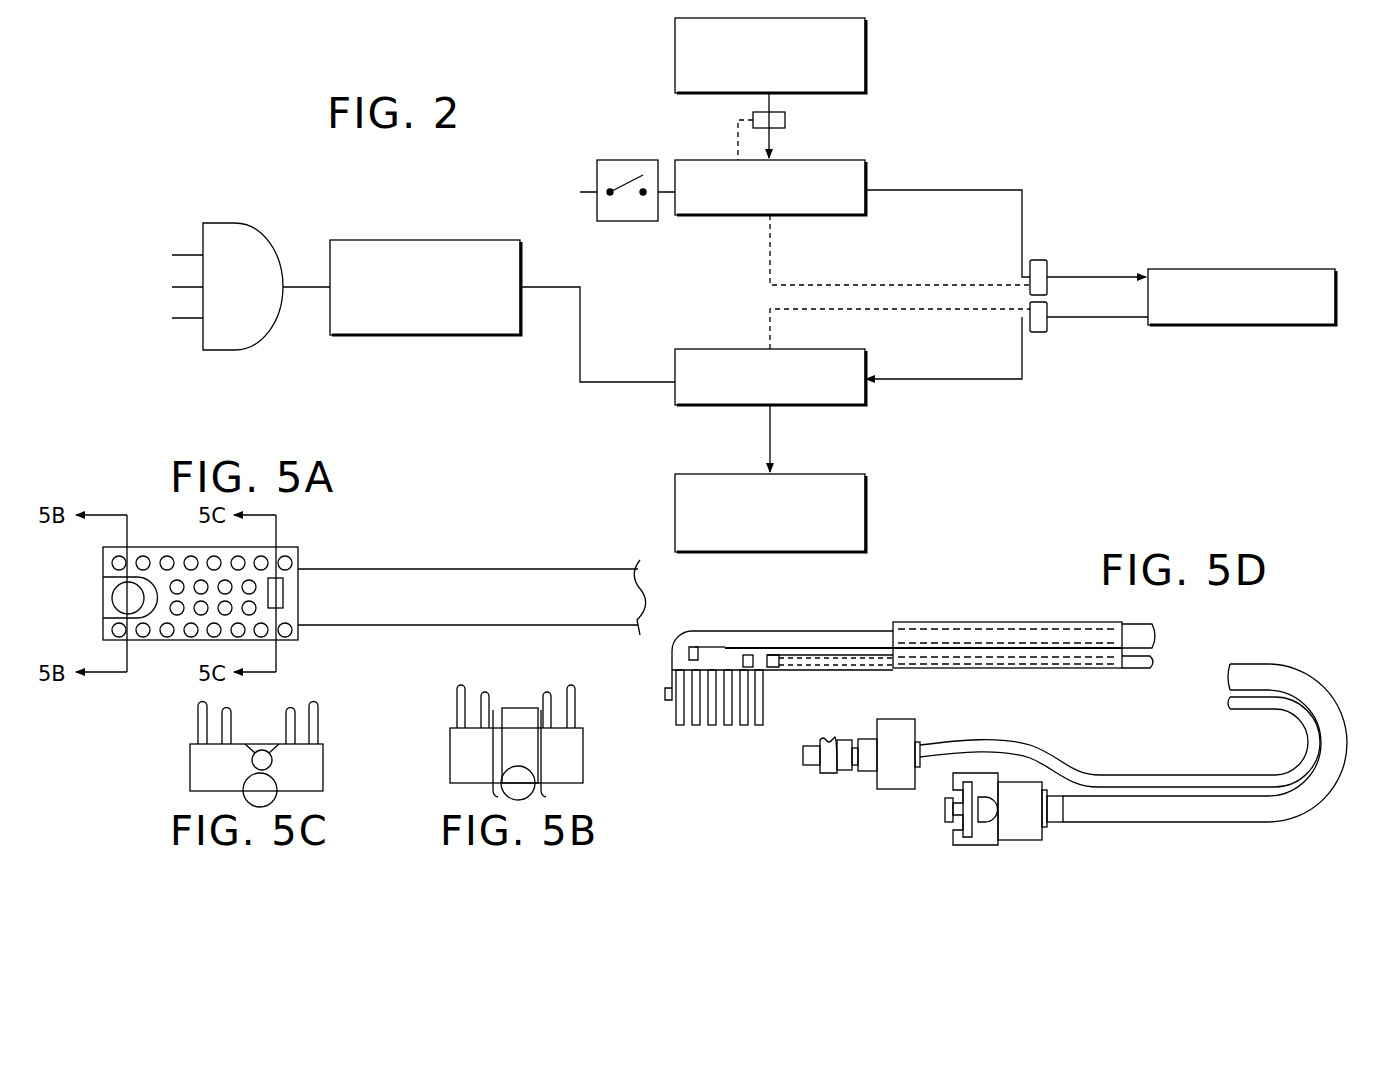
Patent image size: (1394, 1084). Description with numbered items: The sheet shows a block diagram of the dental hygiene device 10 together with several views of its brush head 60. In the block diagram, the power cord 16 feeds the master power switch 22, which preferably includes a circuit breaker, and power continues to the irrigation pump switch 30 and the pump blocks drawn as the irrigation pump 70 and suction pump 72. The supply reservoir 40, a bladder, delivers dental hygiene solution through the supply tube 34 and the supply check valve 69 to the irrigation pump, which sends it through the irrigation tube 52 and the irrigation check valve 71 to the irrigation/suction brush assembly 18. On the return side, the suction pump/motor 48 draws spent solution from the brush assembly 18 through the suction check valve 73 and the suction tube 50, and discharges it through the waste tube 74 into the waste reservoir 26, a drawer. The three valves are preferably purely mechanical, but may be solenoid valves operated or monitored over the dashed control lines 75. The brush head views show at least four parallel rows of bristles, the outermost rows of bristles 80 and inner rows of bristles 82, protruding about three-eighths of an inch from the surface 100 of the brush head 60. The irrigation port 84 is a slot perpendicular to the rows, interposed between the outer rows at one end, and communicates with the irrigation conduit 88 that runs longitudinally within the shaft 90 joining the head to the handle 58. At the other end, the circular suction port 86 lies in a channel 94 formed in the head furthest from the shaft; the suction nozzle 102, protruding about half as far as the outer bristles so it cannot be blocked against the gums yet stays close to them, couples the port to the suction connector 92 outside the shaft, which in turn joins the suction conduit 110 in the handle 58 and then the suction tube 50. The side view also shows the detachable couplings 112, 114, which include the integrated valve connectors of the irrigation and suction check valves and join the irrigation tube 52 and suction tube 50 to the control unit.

In FIG. 2, the dental hygiene device 10 is at (478, 182).
In FIG. 2, the power cord 16 is at (220, 223).
In FIG. 5D, the irrigation/suction brush assembly 18 is at (818, 856).
In FIG. 2, the master power switch 22 is at (370, 240).
In FIG. 2, the waste reservoir 26 is at (825, 474).
In FIG. 2, the irrigation pump switch 30 is at (610, 221).
In FIG. 2, the supply tube 34 is at (693, 105).
In FIG. 2, the supply reservoir 40 is at (675, 33).
In FIG. 2, the suction pump/motor 48 is at (1170, 269).
In FIG. 2, the suction tube 50 is at (868, 399).
In FIG. 5D, the suction tube 50 is at (1334, 703).
In FIG. 2, the irrigation tube 52 is at (1150, 178).
In FIG. 5D, the irrigation tube 52 is at (1283, 745).
In FIG. 5D, the handle 58 is at (892, 603).
In FIG. 5A, the brush head 60 is at (330, 530).
In FIG. 5C, the brush head 60 is at (158, 800).
In FIG. 5B, the brush head 60 is at (618, 807).
In FIG. 5D, the brush head 60 is at (773, 628).
In FIG. 2, the supply check valve 69 is at (785, 120).
In FIG. 2, the irrigation pump 70 is at (848, 160).
In FIG. 2, the irrigation check valve 71 is at (1040, 260).
In FIG. 2, the suction pump 72 is at (683, 405).
In FIG. 2, the suction check valve 73 is at (1040, 332).
In FIG. 2, the waste tube 74 is at (758, 418).
In FIG. 2, the control lines 75 is at (738, 145).
In FIG. 5A, the outermost rows of bristles 80 is at (108, 563).
In FIG. 5C, the outermost rows of bristles 80 is at (198, 724).
In FIG. 5B, the outermost rows of bristles 80 is at (457, 710).
In FIG. 5D, the outermost rows of bristles 80 is at (765, 729).
In FIG. 5A, the inner rows of bristles 82 is at (260, 588).
In FIG. 5C, the inner rows of bristles 82 is at (234, 726).
In FIG. 5B, the inner rows of bristles 82 is at (489, 703).
In FIG. 5A, the irrigation port 84 is at (283, 590).
In FIG. 5C, the irrigation port 84 is at (258, 744).
In FIG. 5D, the irrigation port 84 is at (748, 655).
In FIG. 5A, the suction port 86 is at (128, 598).
In FIG. 5B, the suction port 86 is at (518, 708).
In FIG. 5D, the suction port 86 is at (670, 700).
In FIG. 5C, the irrigation conduit 88 is at (272, 760).
In FIG. 5D, the irrigation conduit 88 is at (1040, 668).
In FIG. 5D, the shaft 90 is at (885, 603).
In FIG. 5C, the suction connector 92 is at (272, 803).
In FIG. 5B, the suction connector 92 is at (535, 790).
In FIG. 5D, the suction connector 92 is at (818, 631).
In FIG. 5A, the channel 94 is at (104, 580).
In FIG. 5B, the channel 94 is at (541, 778).
In FIG. 5D, the channel 94 is at (693, 650).
In FIG. 5C, the surface 100 is at (323, 744).
In FIG. 5B, the surface 100 is at (583, 728).
In FIG. 5D, the surface 100 is at (775, 667).
In FIG. 5B, the suction nozzle 102 is at (493, 756).
In FIG. 5D, the suction nozzle 102 is at (669, 635).
In FIG. 5D, the suction conduit 110 is at (1040, 620).
In FIG. 5D, the irrigation tube coupling 112 is at (893, 789).
In FIG. 5D, the suction tube coupling 114 is at (963, 845).